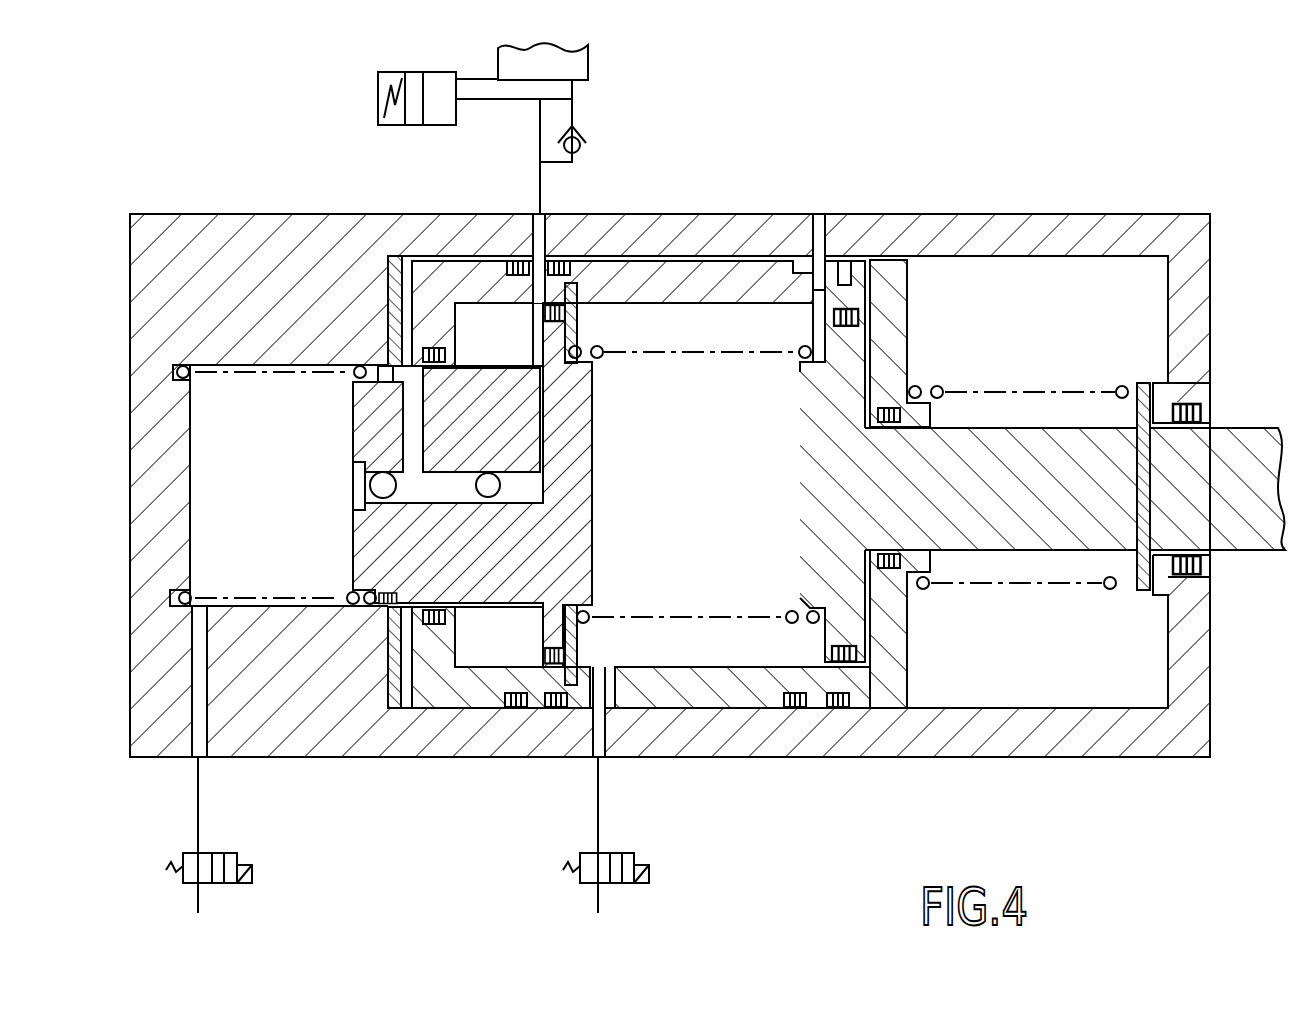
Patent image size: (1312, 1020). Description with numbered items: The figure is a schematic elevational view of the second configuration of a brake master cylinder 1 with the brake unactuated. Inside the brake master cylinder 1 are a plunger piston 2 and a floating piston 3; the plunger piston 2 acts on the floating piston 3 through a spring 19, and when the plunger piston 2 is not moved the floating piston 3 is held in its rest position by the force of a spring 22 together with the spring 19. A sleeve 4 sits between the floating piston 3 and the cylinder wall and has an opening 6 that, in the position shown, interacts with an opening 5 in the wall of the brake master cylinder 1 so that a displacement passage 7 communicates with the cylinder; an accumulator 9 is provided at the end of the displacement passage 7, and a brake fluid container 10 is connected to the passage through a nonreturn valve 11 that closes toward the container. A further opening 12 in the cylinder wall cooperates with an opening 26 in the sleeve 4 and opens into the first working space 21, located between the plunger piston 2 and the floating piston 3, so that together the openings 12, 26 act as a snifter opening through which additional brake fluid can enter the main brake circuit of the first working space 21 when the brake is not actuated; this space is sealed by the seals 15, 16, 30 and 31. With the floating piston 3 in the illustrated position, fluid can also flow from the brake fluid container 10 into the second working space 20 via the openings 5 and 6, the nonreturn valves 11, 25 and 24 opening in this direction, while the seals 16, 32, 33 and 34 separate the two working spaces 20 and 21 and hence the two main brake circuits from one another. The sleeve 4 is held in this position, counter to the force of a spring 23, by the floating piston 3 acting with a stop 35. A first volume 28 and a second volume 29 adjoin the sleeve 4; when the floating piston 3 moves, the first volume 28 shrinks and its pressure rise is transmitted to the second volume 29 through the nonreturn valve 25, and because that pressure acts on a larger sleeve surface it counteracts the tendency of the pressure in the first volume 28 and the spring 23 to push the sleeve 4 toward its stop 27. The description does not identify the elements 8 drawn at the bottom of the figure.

The brake master cylinder 1 is at (193, 238).
The plunger piston 2 is at (1047, 440).
The floating piston 3 is at (372, 443).
The sleeve 4 is at (705, 262).
The opening 5 is at (534, 233).
The opening 6 is at (537, 285).
The displacement passage 7 is at (507, 92).
The solenoid valve 8 is at (223, 884).
The accumulator 9 is at (378, 113).
The brake fluid container 10 is at (588, 82).
The nonreturn valve 11 is at (583, 150).
The further opening 12 is at (816, 226).
The seal 15 is at (850, 327).
The seal 16 is at (576, 346).
The spring 19 is at (598, 358).
The second working space 20 is at (254, 483).
The first working space 21 is at (688, 496).
The spring 22 is at (190, 376).
The spring 23 is at (937, 386).
The nonreturn valve 24 is at (383, 492).
The nonreturn valve 25 is at (491, 492).
The opening 26 is at (820, 295).
The stop 27 is at (388, 300).
The first volume 28 is at (512, 350).
The second volume 29 is at (410, 470).
The seal 30 is at (800, 270).
The seal 31 is at (846, 262).
The seal 32 is at (508, 710).
The seal 33 is at (555, 710).
The seal 34 is at (378, 360).
The stop 35 is at (577, 312).